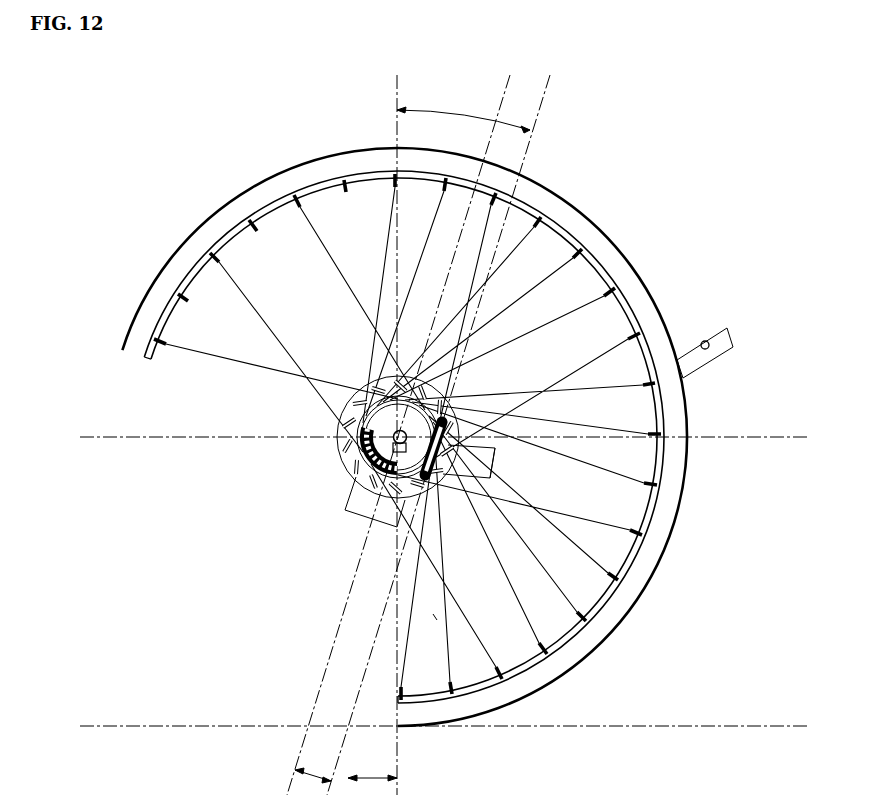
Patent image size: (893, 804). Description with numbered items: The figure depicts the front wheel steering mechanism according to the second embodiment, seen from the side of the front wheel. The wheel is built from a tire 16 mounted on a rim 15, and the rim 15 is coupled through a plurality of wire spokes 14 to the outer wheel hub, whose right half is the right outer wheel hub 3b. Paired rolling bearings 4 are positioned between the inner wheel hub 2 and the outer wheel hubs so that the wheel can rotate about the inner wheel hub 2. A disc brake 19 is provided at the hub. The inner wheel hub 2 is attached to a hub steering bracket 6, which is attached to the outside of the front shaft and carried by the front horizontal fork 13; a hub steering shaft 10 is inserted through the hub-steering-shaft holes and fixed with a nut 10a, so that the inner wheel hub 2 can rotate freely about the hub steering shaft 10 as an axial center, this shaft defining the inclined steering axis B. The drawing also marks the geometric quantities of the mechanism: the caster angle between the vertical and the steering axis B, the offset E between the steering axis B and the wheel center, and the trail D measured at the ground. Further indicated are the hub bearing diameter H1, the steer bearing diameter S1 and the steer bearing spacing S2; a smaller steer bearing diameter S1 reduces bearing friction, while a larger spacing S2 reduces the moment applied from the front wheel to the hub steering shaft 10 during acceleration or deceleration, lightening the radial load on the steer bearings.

The inner wheel hub 2 is at (347, 503).
The right outer wheel hub 3b is at (342, 467).
The rolling bearings 4 is at (347, 476).
The hub steering bracket 6 is at (447, 473).
The hub steering shaft 10 is at (440, 490).
The nut 10a is at (500, 432).
The front horizontal fork 13 is at (678, 352).
The wire spokes 14 is at (533, 280).
The rim 15 is at (183, 267).
The tire 16 is at (210, 212).
The disc brake 19 is at (335, 453).
The steering axis B is at (527, 153).
The hub bearing diameter H1 is at (350, 508).
The steer bearing diameter S1 is at (435, 615).
The steer bearing spacing S2 is at (495, 463).
The offset E is at (313, 763).
The trail D is at (372, 767).